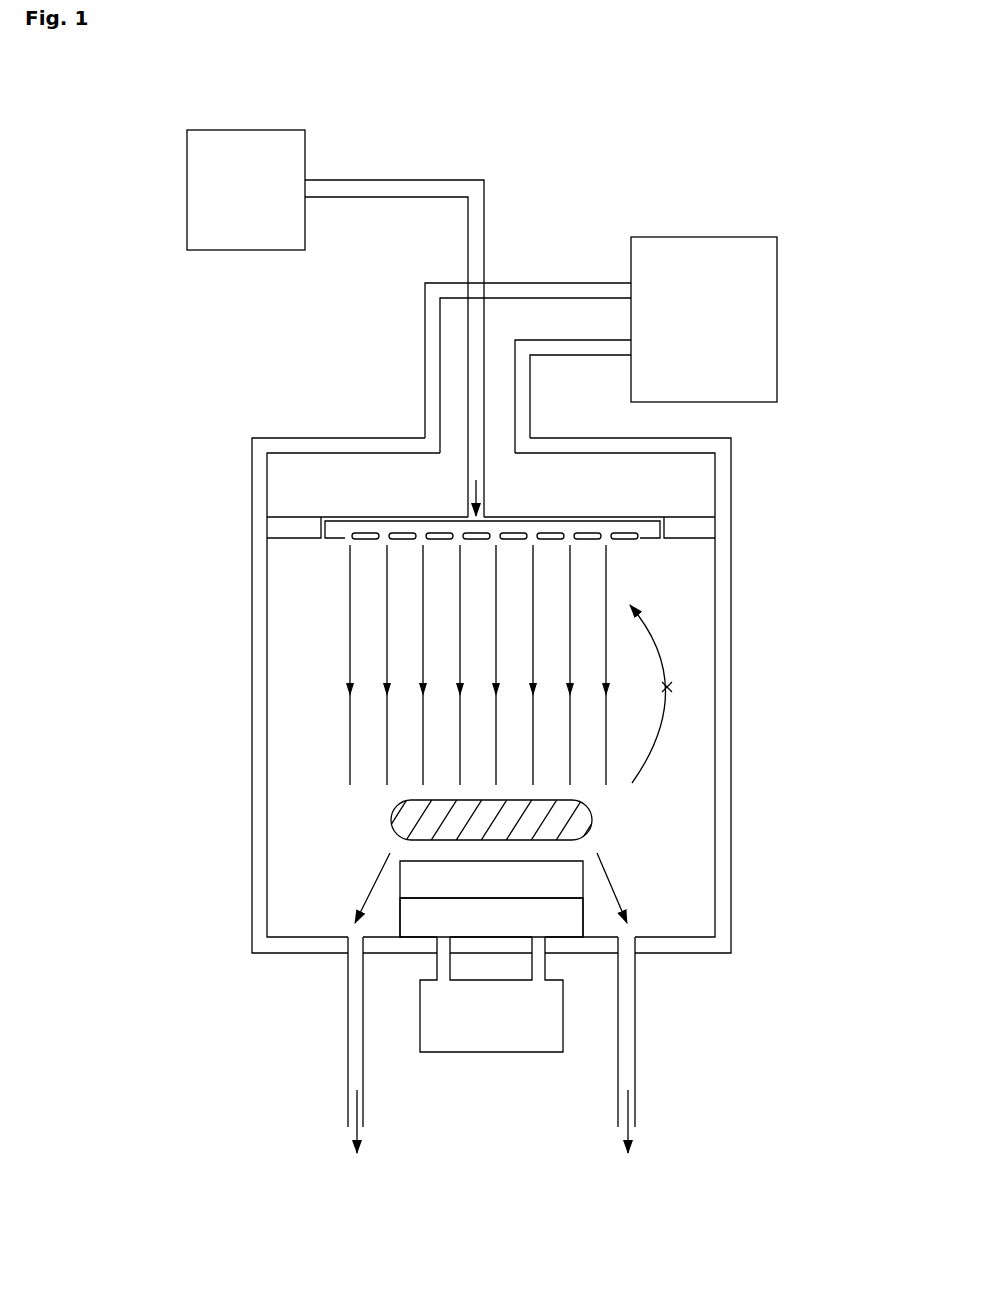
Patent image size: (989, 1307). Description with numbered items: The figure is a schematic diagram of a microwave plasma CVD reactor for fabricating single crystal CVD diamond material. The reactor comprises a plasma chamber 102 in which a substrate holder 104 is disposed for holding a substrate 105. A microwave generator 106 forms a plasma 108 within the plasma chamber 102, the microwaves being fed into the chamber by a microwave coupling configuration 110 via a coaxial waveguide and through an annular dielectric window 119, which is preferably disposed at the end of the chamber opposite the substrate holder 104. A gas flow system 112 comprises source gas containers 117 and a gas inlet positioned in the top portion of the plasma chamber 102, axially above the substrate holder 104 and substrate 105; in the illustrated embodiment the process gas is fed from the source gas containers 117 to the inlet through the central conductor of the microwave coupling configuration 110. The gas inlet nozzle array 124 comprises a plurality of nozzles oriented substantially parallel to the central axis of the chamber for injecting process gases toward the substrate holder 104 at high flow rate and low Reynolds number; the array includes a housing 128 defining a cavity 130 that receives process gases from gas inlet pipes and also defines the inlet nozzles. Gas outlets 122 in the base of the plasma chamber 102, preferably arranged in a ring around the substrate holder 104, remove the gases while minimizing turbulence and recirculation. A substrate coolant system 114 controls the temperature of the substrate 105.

The plasma chamber 102 is at (252, 768).
The substrate holder 104 is at (567, 915).
The substrate 105 is at (565, 878).
The microwave generator 106 is at (757, 288).
The plasma 108 is at (590, 817).
The microwave coupling configuration 110 is at (410, 385).
The gas flow system 112 is at (492, 178).
The substrate coolant system 114 is at (477, 1035).
The source gas containers 117 is at (290, 152).
The annular dielectric window 119 is at (285, 528).
The gas outlets 122 is at (493, 1023).
The gas inlet nozzle array 124 is at (343, 547).
The housing 128 is at (357, 514).
The cavity 130 is at (603, 525).